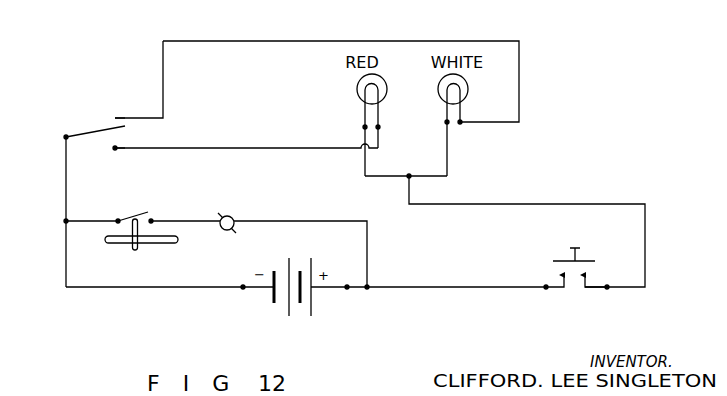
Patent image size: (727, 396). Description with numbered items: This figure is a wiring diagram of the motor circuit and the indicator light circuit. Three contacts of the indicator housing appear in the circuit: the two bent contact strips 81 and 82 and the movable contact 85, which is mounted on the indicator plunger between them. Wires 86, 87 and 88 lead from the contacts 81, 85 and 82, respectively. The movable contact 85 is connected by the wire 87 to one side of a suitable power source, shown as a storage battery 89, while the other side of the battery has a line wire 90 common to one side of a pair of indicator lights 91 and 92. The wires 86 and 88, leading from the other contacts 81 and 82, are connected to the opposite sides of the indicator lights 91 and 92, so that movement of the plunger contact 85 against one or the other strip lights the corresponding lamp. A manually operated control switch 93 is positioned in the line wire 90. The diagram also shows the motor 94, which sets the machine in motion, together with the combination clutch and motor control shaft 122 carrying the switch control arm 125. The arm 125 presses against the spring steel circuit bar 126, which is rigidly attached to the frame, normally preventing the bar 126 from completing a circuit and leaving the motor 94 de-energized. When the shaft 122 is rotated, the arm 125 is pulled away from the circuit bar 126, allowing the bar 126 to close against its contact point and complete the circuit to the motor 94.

The contact 81 is at (115, 118).
The contact 82 is at (115, 150).
The movable contact 85 is at (86, 131).
The wire 86 is at (345, 41).
The wire 87 is at (133, 288).
The wire 88 is at (254, 150).
The storage battery 89 is at (285, 306).
The wire 90 is at (510, 204).
The indicator light 91 is at (358, 82).
The indicator light 92 is at (469, 85).
The manually operated control switch 93 is at (560, 259).
The motor 94 is at (237, 214).
The combination clutch and motor control shaft 122 is at (147, 240).
The switch control arm 125 is at (132, 244).
The spring steel circuit bar 126 is at (127, 215).